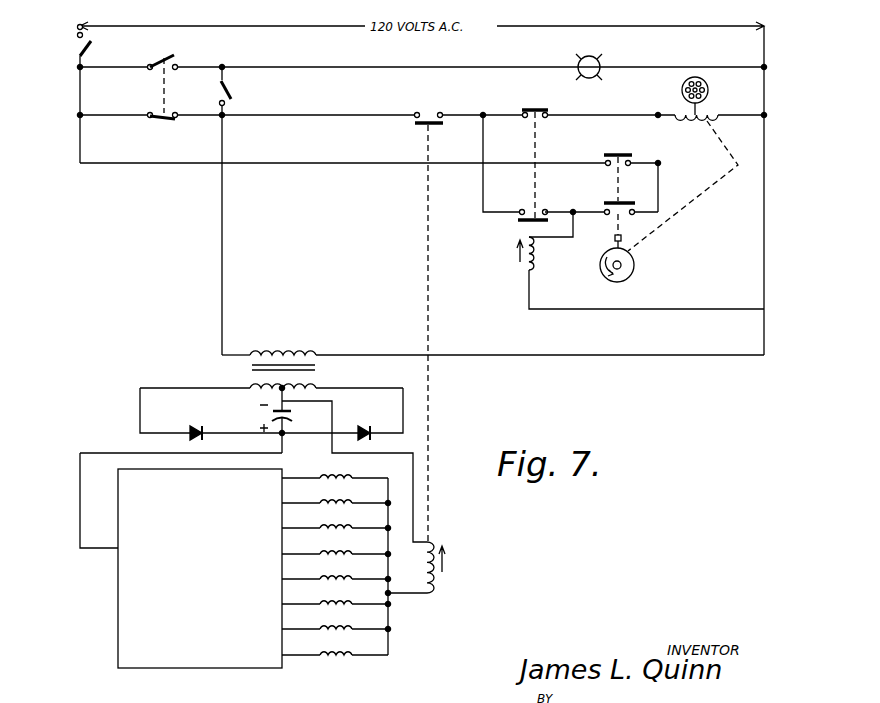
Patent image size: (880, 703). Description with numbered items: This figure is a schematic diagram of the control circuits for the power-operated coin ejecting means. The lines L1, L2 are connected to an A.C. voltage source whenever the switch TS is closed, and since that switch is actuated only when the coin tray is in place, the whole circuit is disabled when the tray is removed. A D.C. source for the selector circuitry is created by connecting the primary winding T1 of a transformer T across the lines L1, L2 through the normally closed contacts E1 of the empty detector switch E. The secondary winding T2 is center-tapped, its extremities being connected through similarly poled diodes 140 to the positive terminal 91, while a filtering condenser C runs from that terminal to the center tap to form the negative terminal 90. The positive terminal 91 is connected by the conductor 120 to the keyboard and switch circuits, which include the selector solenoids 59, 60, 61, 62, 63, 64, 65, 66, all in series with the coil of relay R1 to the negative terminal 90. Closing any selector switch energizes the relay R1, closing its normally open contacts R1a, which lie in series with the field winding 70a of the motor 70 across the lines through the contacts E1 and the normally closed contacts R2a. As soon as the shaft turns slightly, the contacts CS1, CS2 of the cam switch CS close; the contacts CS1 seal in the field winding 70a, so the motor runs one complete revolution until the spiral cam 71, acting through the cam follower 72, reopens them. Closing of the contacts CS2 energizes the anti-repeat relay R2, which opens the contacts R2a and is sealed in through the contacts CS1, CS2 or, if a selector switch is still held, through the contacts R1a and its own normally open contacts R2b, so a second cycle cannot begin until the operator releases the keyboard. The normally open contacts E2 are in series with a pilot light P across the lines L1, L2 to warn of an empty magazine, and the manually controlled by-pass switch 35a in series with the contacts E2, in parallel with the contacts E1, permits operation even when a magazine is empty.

The switch TS is at (76, 40).
The line L1 is at (78, 85).
The line L2 is at (764, 50).
The empty detector switch E is at (150, 94).
The normally closed contacts E1 is at (170, 122).
The normally open contacts E2 is at (173, 56).
The by-pass switch 35a is at (236, 93).
The pilot light P is at (598, 59).
The gear motor 70 is at (708, 88).
The field winding 70a is at (700, 120).
The normally open contacts R1a is at (422, 126).
The normally closed contacts R2a is at (540, 108).
The normally open contacts R2b is at (537, 210).
The cam switch CS is at (609, 186).
The cam switch contacts CS1 is at (617, 148).
The cam switch contacts CS2 is at (626, 206).
The cam follower 72 is at (612, 240).
The spiral cam 71 is at (634, 276).
The anti-repeat relay R2 is at (540, 268).
The relay R1 is at (444, 578).
The transformer T is at (475, 365).
The primary winding T1 is at (287, 350).
The secondary winding T2 is at (262, 388).
The negative terminal 90 is at (290, 395).
The positive terminal 91 is at (284, 437).
The filtering condenser C is at (292, 417).
The diodes 140 is at (198, 427).
The conductor 120 is at (94, 549).
The selector solenoid 59 is at (348, 474).
The selector solenoid 60 is at (348, 499).
The selector solenoid 61 is at (348, 524).
The selector solenoid 62 is at (348, 550).
The selector solenoid 63 is at (348, 575).
The selector solenoid 64 is at (348, 600).
The selector solenoid 65 is at (348, 625).
The selector solenoid 66 is at (348, 651).